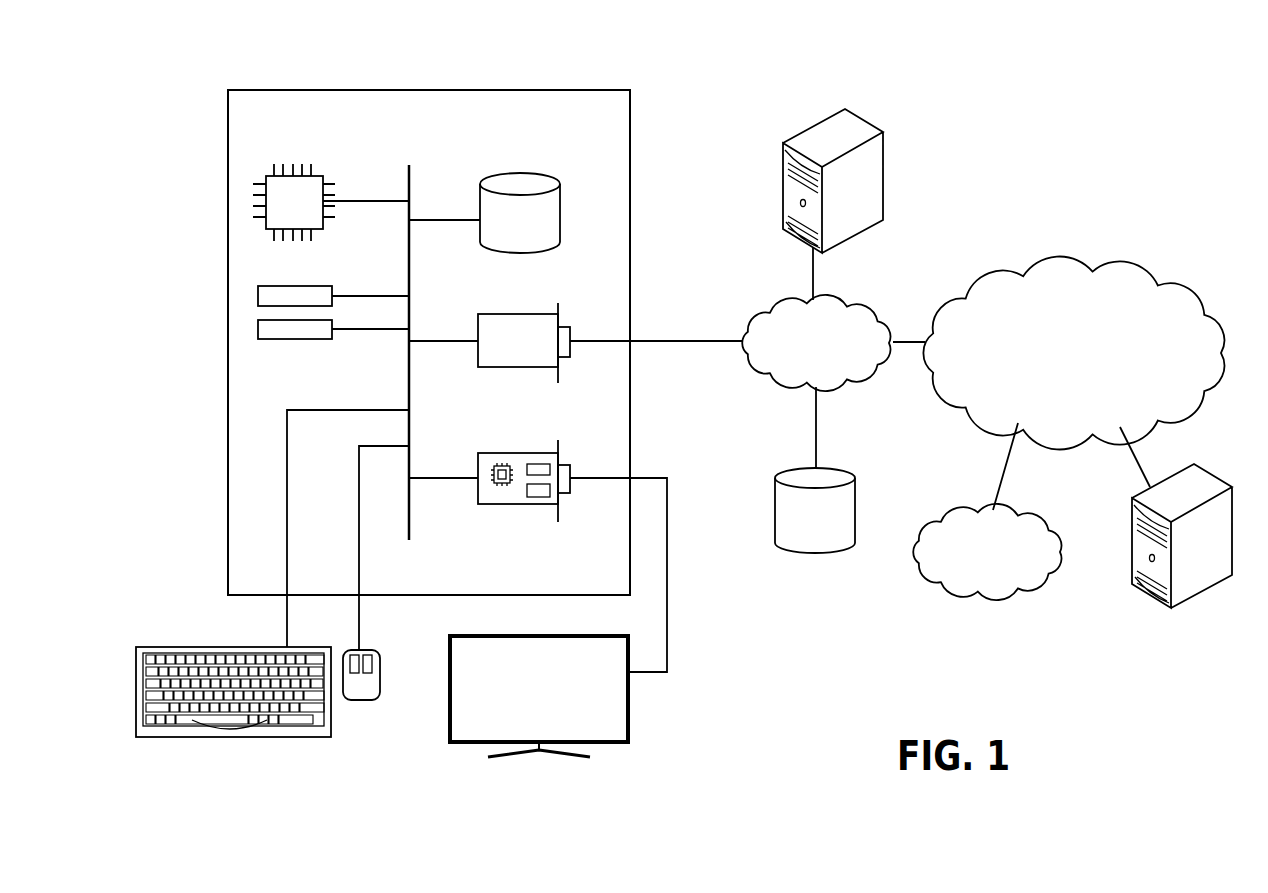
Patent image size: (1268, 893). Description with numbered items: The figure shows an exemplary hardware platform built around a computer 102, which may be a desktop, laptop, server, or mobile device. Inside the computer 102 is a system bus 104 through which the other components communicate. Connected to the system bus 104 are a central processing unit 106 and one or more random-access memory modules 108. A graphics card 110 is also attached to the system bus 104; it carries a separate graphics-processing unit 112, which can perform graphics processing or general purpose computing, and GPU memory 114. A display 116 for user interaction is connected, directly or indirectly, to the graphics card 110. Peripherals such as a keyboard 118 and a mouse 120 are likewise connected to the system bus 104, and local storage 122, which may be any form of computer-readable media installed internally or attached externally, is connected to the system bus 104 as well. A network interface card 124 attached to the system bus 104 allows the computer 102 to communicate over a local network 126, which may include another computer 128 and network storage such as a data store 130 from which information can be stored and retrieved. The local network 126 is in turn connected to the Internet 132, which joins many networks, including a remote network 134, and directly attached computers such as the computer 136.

The computer 102 is at (587, 88).
The system bus 104 is at (410, 175).
The central processing unit 106 is at (317, 170).
The random-access memory modules 108 is at (332, 328).
The graphics card 110 is at (538, 541).
The graphics-processing unit 112 is at (502, 487).
The GPU memory 114 is at (535, 497).
The display 116 is at (630, 725).
The keyboard 118 is at (237, 737).
The mouse 120 is at (359, 700).
The local storage 122 is at (563, 202).
The network interface card 124 is at (478, 325).
The local network 126 is at (865, 300).
The computer 128 is at (868, 120).
The data store 130 is at (847, 470).
The Internet 132 is at (1117, 265).
The remote network 134 is at (1045, 512).
The computer 136 is at (1210, 468).